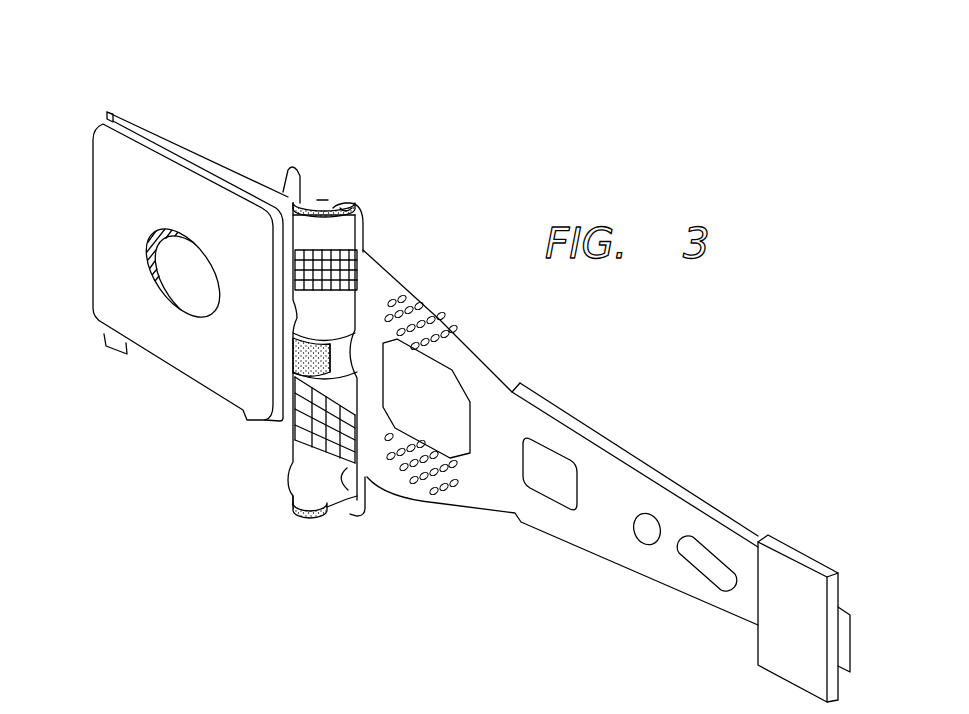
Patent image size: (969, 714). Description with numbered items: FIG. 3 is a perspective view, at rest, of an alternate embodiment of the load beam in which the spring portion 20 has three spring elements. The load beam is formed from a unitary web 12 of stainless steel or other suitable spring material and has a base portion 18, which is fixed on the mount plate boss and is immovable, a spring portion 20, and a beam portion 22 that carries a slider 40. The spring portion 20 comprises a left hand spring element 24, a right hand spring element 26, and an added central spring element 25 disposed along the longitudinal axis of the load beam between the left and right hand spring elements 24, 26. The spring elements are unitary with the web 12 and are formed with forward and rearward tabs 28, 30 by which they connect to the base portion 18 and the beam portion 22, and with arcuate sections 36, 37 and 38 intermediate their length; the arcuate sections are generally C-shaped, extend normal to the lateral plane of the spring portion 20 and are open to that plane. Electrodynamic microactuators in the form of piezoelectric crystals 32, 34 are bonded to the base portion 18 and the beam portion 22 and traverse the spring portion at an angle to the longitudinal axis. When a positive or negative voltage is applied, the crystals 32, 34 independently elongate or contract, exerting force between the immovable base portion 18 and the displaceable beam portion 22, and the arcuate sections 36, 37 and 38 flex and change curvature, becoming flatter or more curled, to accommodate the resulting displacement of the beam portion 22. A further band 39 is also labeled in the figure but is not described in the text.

The unitary web 12 is at (557, 507).
The base portion 18 is at (147, 128).
The spring portion 20 is at (335, 191).
The beam portion 22 is at (578, 417).
The left hand spring element 24 is at (305, 232).
The central spring element 25 is at (340, 355).
The right hand spring element 26 is at (345, 203).
The forward tab 28 is at (365, 220).
The rearward tab 30 is at (302, 200).
The piezoelectric crystal 32 is at (313, 412).
The piezoelectric crystal 34 is at (335, 268).
The arcuate section 36 is at (293, 505).
The arcuate section 37 is at (320, 348).
The arcuate section 38 is at (321, 200).
The crimp band 39 is at (315, 200).
The slider 40 is at (788, 665).